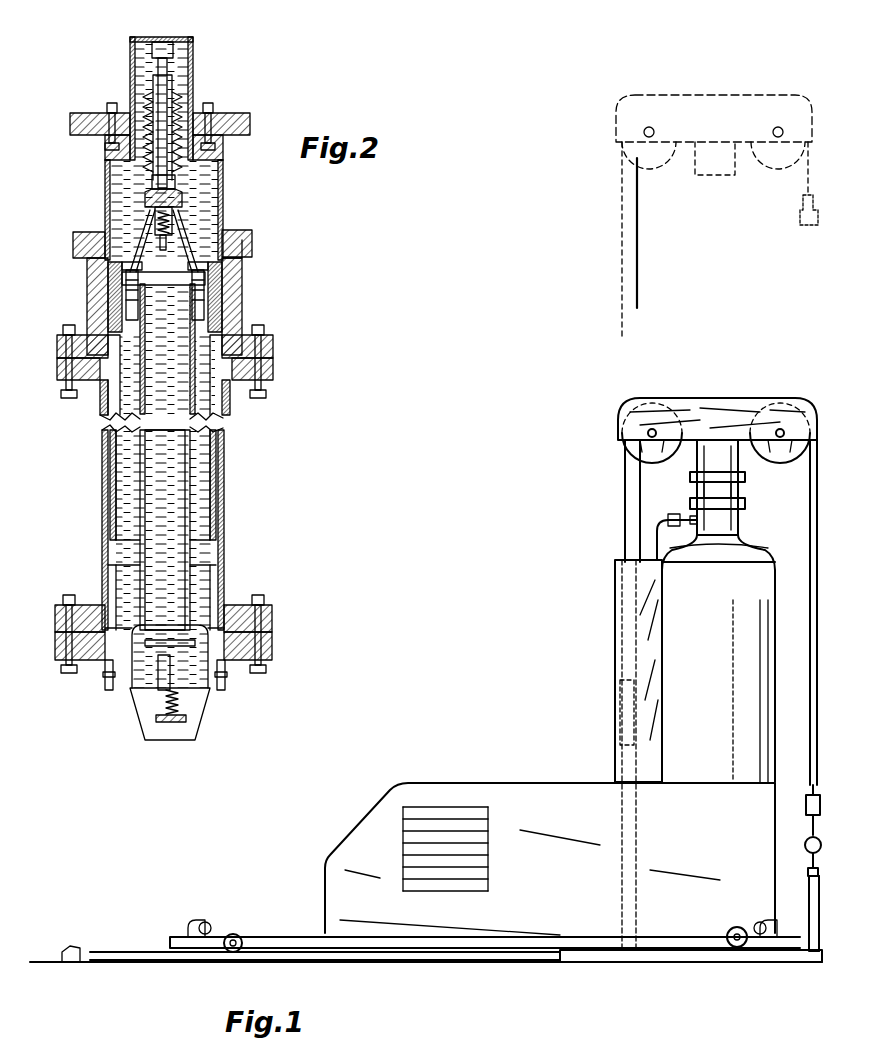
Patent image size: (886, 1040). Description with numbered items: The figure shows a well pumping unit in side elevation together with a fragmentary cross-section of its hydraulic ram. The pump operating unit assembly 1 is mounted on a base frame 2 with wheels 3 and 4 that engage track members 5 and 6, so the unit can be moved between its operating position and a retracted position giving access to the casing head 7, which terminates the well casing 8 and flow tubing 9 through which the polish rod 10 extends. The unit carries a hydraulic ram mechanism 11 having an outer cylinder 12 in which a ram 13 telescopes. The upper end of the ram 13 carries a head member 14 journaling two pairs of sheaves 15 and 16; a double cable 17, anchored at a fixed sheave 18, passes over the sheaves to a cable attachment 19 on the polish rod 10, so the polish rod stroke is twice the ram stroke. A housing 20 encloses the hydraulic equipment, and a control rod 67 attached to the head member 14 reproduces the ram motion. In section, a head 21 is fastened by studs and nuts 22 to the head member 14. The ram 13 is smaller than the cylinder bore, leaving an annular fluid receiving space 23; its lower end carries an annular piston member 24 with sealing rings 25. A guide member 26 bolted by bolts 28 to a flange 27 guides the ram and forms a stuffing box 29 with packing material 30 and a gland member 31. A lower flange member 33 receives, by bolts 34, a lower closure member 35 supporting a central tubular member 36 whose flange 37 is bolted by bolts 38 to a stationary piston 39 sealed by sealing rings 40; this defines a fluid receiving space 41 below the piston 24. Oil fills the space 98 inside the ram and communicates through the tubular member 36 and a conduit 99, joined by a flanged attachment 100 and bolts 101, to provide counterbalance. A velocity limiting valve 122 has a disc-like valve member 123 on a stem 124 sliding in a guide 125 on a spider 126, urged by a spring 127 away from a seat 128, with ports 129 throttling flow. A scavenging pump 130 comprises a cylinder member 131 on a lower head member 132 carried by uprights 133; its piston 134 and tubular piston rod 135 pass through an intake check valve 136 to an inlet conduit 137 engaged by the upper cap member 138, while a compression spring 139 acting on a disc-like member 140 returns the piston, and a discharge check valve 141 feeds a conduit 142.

In FIG. 1, the pump operating unit assembly 1 is at (592, 760).
In FIG. 1, the base frame 2 is at (275, 937).
In FIG. 1, the wheel 3 is at (233, 952).
In FIG. 1, the wheel 4 is at (730, 947).
In FIG. 1, the track member 5 is at (140, 962).
In FIG. 1, the track member 6 is at (618, 962).
In FIG. 1, the casing head 7 is at (809, 885).
In FIG. 1, the well casing 8 is at (809, 916).
In FIG. 1, the flow tubing 9 is at (808, 870).
In FIG. 1, the polish rod 10 is at (806, 840).
In FIG. 2, the hydraulic ram mechanism 11 is at (270, 436).
In FIG. 1, the hydraulic ram mechanism 11 is at (763, 537).
In FIG. 2, the outer cylinder 12 is at (224, 445).
In FIG. 1, the outer cylinder 12 is at (717, 502).
In FIG. 2, the ram 13 is at (218, 210).
In FIG. 1, the ram 13 is at (700, 168).
In FIG. 2, the head member 14 is at (250, 125).
In FIG. 1, the head member 14 is at (690, 405).
In FIG. 1, the sheaves 15 is at (625, 445).
In FIG. 1, the sheaves 16 is at (785, 460).
In FIG. 1, the double cable 17 is at (625, 505).
In FIG. 1, the anchor 18 is at (620, 700).
In FIG. 1, the cable attachment 19 is at (808, 788).
In FIG. 1, the housing 20 is at (512, 782).
In FIG. 2, the head 21 is at (223, 148).
In FIG. 2, the studs and nuts 22 is at (213, 108).
In FIG. 2, the annular fluid receiving space 23 is at (102, 418).
In FIG. 2, the annular piston member 24 is at (216, 462).
In FIG. 2, the sealing rings 25 is at (216, 490).
In FIG. 2, the guide member 26 is at (242, 318).
In FIG. 2, the flange 27 is at (273, 375).
In FIG. 2, the bolts 28 is at (273, 340).
In FIG. 2, the stuffing box 29 is at (196, 290).
In FIG. 2, the packing material 30 is at (242, 262).
In FIG. 2, the gland member 31 is at (252, 240).
In FIG. 2, the flange member 33 is at (272, 620).
In FIG. 2, the bolts 34 is at (225, 684).
In FIG. 2, the lower closure member 35 is at (272, 650).
In FIG. 2, the central tubular member 36 is at (190, 560).
In FIG. 2, the flange 37 is at (87, 310).
In FIG. 2, the bolts 38 is at (108, 272).
In FIG. 2, the stationary piston 39 is at (222, 288).
In FIG. 2, the sealing rings 40 is at (124, 300).
In FIG. 2, the fluid receiving space 41 is at (116, 556).
In FIG. 1, the control rod 67 is at (660, 512).
In FIG. 2, the space 98 is at (223, 190).
In FIG. 2, the conduit 99 is at (195, 710).
In FIG. 2, the flanged attachment 100 is at (132, 692).
In FIG. 2, the bolts 101 is at (110, 690).
In FIG. 2, the velocity limiting valve 122 is at (145, 695).
In FIG. 2, the valve member 123 is at (165, 640).
In FIG. 2, the stem 124 is at (178, 708).
In FIG. 2, the guide 125 is at (105, 682).
In FIG. 2, the spider 126 is at (200, 680).
In FIG. 2, the spring 127 is at (163, 720).
In FIG. 2, the seat 128 is at (195, 640).
In FIG. 2, the ports 129 is at (288, 601).
In FIG. 2, the scavenging pump 130 is at (135, 118).
In FIG. 2, the cylinder member 131 is at (152, 185).
In FIG. 2, the lower head member 132 is at (145, 200).
In FIG. 2, the uprights 133 is at (180, 262).
In FIG. 2, the piston 134 is at (148, 188).
In FIG. 2, the tubular piston rod 135 is at (178, 110).
In FIG. 2, the intake check valve 136 is at (172, 100).
In FIG. 2, the inlet conduit 137 is at (164, 75).
In FIG. 2, the upper cap member 138 is at (160, 42).
In FIG. 2, the compression spring 139 is at (193, 115).
In FIG. 2, the disc-like member 140 is at (146, 105).
In FIG. 2, the discharge check valve 141 is at (155, 222).
In FIG. 2, the conduit 142 is at (73, 246).